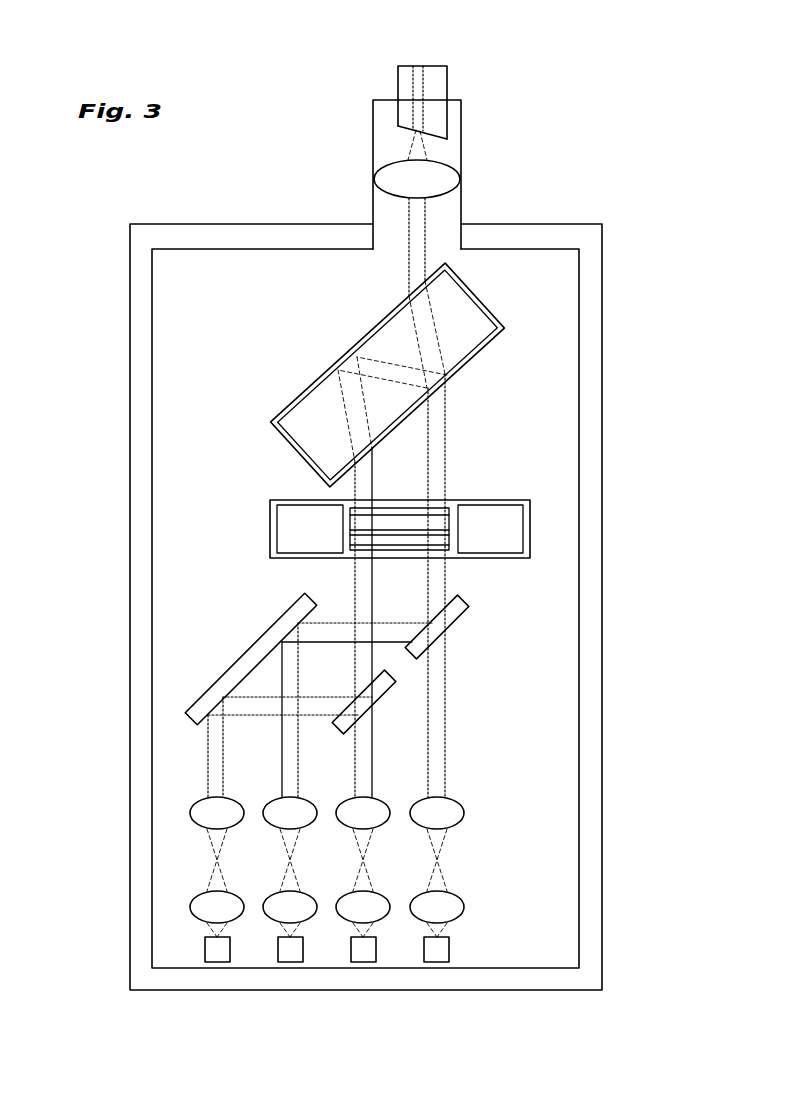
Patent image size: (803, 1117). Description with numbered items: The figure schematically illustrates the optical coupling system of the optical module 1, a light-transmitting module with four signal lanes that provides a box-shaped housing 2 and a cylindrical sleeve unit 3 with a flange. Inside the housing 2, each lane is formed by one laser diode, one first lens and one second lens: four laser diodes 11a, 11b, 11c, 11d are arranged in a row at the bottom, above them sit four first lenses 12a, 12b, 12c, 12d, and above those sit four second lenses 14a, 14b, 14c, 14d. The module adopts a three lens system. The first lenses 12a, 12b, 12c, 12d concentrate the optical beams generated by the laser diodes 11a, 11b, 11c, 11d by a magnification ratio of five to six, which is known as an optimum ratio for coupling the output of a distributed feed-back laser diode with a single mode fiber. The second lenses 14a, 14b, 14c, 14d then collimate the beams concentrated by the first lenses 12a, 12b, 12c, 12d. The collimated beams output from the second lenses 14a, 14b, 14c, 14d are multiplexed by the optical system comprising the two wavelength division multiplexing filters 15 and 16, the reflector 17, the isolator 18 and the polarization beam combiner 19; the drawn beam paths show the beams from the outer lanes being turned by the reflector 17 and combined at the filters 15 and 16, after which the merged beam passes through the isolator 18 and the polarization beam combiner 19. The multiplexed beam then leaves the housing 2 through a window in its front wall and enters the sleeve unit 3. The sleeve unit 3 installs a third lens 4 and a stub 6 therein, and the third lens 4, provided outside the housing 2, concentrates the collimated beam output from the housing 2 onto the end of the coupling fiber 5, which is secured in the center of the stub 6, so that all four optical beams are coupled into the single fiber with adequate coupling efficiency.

The optical module 1 is at (586, 52).
The housing 2 is at (590, 677).
The sleeve unit 3 is at (460, 147).
The third lens 4 is at (445, 177).
The coupling fiber 5 is at (418, 118).
The stub 6 is at (438, 82).
The polarization beam combiner 19 is at (482, 315).
The isolator 18 is at (508, 532).
The reflector 17 is at (250, 660).
The wavelength division multiplexing filter 16 is at (453, 617).
The wavelength division multiplexing filter 15 is at (377, 692).
The second lens 14a is at (205, 812).
The second lens 14b is at (285, 820).
The second lens 14c is at (370, 808).
The second lens 14d is at (450, 813).
The first lens 12a is at (205, 905).
The first lens 12b is at (283, 903).
The first lens 12c is at (370, 900).
The first lens 12d is at (450, 907).
The laser diode 11a is at (217, 950).
The laser diode 11b is at (291, 950).
The laser diode 11c is at (364, 950).
The laser diode 11d is at (437, 950).